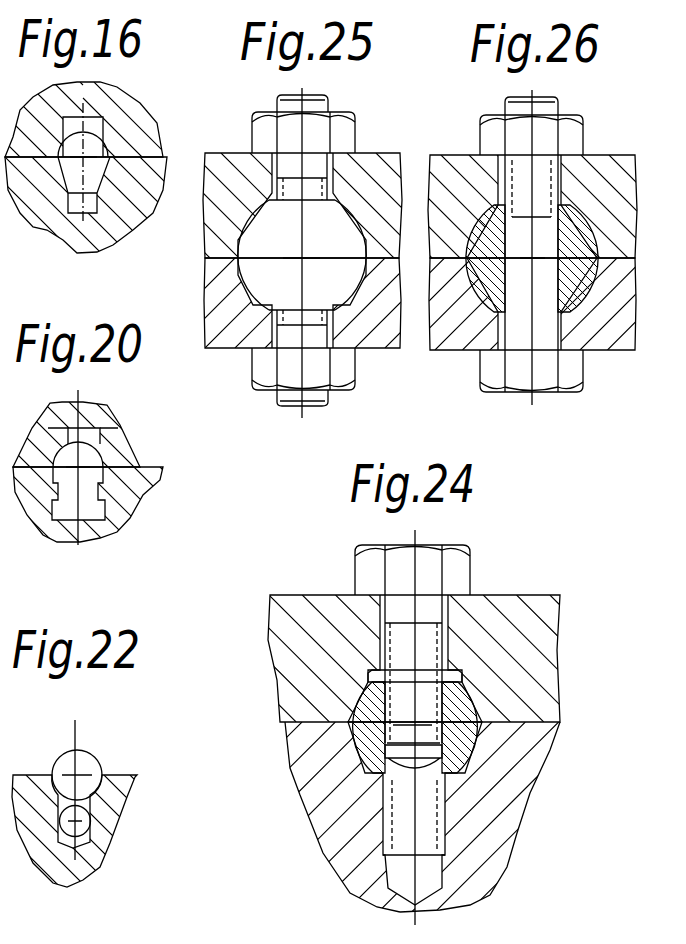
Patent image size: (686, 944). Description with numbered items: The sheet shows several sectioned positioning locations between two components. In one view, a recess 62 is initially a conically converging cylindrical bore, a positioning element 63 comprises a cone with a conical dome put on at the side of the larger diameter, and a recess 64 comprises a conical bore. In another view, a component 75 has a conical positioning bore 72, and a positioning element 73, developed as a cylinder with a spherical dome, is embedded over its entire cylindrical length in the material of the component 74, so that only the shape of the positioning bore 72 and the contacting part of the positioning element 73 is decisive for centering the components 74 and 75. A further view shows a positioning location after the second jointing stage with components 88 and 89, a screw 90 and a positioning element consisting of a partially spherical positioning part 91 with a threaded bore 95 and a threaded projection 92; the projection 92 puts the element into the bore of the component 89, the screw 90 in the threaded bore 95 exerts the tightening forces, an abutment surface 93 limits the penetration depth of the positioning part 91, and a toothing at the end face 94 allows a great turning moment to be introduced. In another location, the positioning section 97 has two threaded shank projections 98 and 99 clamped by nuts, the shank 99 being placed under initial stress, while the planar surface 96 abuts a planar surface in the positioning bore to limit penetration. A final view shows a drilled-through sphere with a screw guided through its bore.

In FIG. 16, the recess 62 is at (92, 125).
In FIG. 16, the positioning element 63 is at (90, 152).
In FIG. 16, the recess 64 is at (88, 200).
In FIG. 20, the positioning bore 72 is at (88, 437).
In FIG. 20, the positioning element 73 is at (90, 455).
In FIG. 20, the component 74 is at (122, 505).
In FIG. 20, the component 75 is at (50, 427).
In FIG. 24, the component 88 is at (525, 620).
In FIG. 24, the component 89 is at (480, 852).
In FIG. 24, the screw 90 is at (432, 610).
In FIG. 24, the positioning part 91 is at (457, 713).
In FIG. 24, the threaded projection 92 is at (422, 833).
In FIG. 24, the abutment surface 93 is at (345, 832).
In FIG. 24, the end face 94 is at (365, 678).
In FIG. 24, the threaded bore 95 is at (440, 790).
In FIG. 25, the planar surface 96 is at (312, 318).
In FIG. 25, the positioning section 97 is at (325, 227).
In FIG. 25, the projection 98 is at (292, 165).
In FIG. 25, the threaded shank 99 is at (340, 310).